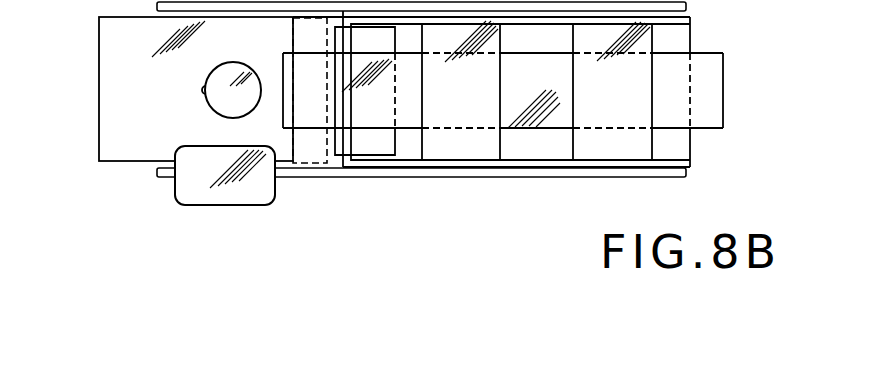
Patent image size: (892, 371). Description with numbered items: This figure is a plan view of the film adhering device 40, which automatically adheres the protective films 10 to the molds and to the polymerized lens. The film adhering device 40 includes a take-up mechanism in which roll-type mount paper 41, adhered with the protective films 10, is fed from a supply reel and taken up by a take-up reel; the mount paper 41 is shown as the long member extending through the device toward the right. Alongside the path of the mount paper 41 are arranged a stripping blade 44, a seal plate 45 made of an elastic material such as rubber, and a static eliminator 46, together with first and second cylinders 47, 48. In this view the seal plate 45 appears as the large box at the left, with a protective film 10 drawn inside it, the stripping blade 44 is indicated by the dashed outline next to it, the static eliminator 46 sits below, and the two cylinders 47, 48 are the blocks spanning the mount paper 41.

The film adhering device 40 is at (740, 24).
The roll-type mount paper 41 is at (712, 115).
The stripping blade 44 is at (293, 35).
The seal plate 45 is at (113, 89).
The protective film 10 is at (212, 106).
The static eliminator 46 is at (175, 193).
The first cylinder 47 is at (478, 110).
The second cylinder 48 is at (628, 110).